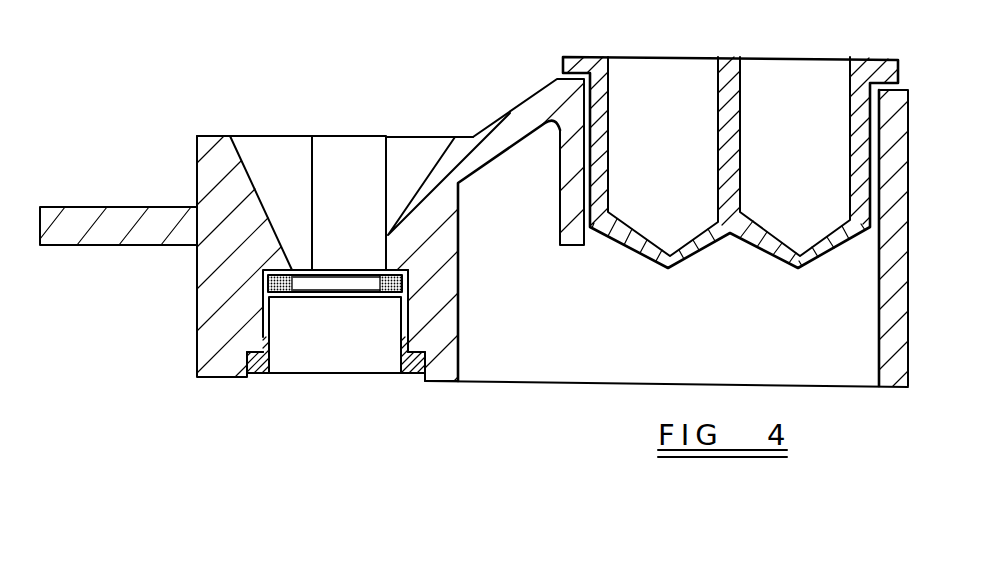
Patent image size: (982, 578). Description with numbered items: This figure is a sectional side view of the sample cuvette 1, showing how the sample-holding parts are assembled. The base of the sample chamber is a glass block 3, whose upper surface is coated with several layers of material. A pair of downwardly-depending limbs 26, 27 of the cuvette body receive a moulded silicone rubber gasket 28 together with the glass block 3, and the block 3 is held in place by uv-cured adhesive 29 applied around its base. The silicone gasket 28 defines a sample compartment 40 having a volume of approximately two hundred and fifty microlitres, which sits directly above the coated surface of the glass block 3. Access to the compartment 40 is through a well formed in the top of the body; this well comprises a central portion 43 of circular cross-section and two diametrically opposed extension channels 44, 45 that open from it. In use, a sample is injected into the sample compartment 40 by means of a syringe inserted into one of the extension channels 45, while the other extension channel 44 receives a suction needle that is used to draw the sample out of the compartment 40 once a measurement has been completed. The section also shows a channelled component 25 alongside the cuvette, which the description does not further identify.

The sample cuvette 1 is at (153, 181).
The glass block 3 is at (353, 356).
The collecting channel 25 is at (725, 236).
The downwardly-depending limb 26 is at (197, 322).
The downwardly-depending limb 27 is at (460, 313).
The silicone rubber gasket 28 is at (272, 282).
The uv-cured adhesive 29 is at (262, 377).
The sample compartment 40 is at (318, 283).
The central portion 43 is at (345, 153).
The extension channel 44 is at (260, 157).
The extension channel 45 is at (412, 163).